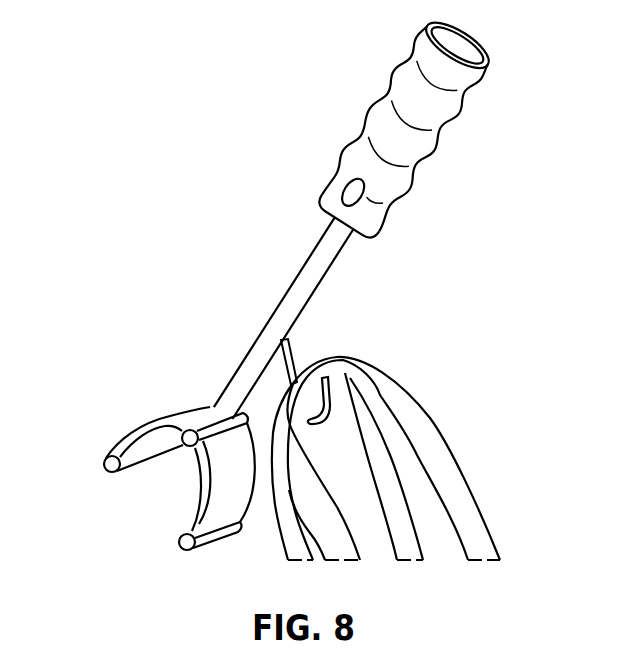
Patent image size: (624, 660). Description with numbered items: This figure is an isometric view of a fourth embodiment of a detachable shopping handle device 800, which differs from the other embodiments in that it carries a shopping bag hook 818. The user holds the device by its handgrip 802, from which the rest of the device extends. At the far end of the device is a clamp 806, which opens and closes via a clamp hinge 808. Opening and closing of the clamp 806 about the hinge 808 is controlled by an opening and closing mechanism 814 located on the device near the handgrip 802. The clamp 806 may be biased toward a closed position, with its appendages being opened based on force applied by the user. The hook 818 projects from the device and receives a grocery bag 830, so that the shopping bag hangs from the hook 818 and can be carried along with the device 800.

The detachable shopping handle device 800 is at (130, 137).
The handgrip 802 is at (430, 148).
The opening and closing mechanism 814 is at (344, 187).
The hook 818 is at (291, 355).
The clamp 806 is at (175, 415).
The clamp hinge 808 is at (178, 453).
The grocery bag 830 is at (446, 449).